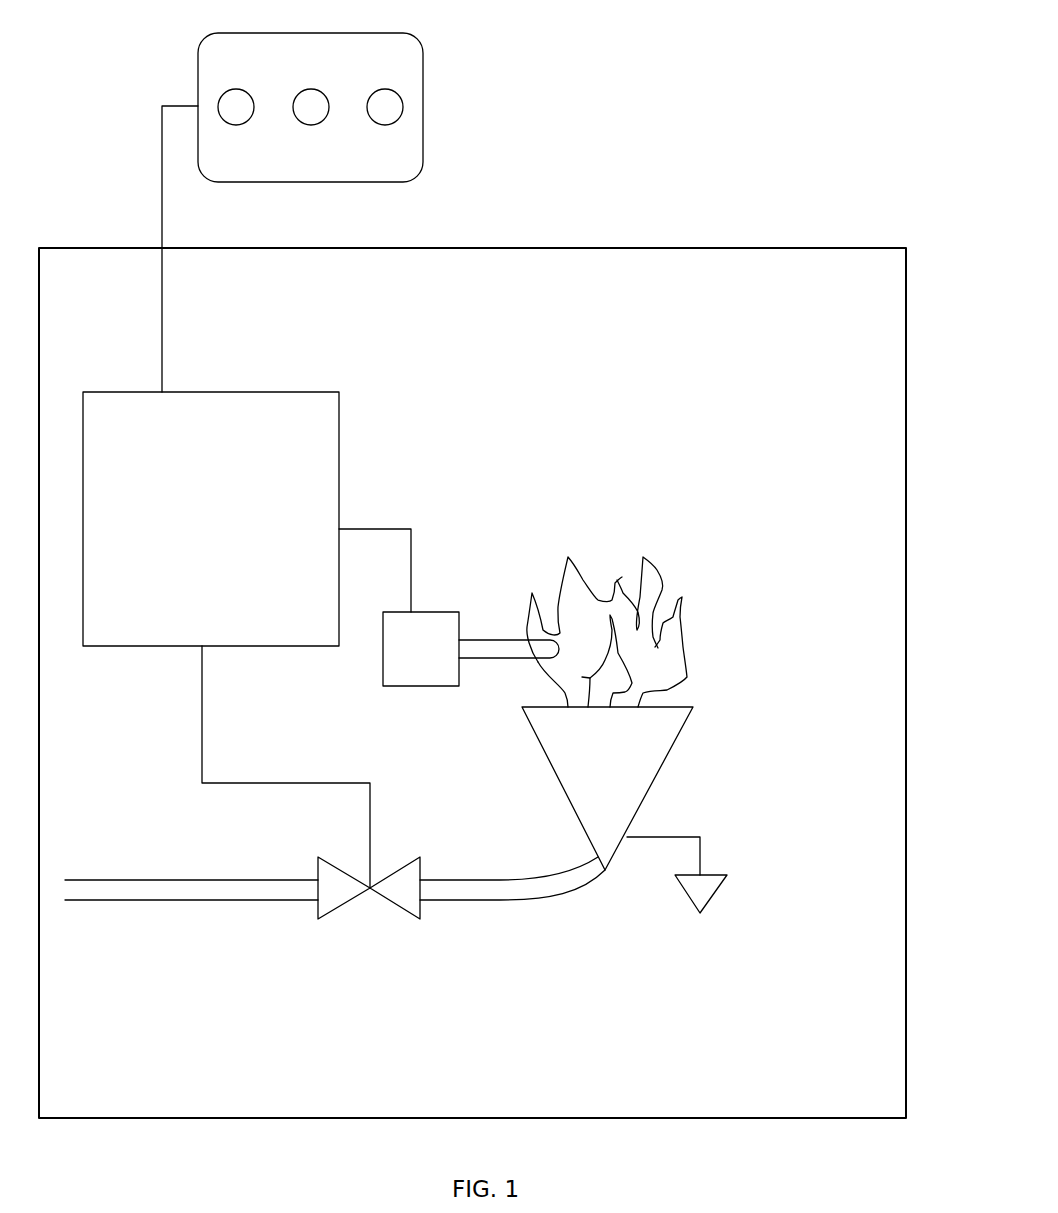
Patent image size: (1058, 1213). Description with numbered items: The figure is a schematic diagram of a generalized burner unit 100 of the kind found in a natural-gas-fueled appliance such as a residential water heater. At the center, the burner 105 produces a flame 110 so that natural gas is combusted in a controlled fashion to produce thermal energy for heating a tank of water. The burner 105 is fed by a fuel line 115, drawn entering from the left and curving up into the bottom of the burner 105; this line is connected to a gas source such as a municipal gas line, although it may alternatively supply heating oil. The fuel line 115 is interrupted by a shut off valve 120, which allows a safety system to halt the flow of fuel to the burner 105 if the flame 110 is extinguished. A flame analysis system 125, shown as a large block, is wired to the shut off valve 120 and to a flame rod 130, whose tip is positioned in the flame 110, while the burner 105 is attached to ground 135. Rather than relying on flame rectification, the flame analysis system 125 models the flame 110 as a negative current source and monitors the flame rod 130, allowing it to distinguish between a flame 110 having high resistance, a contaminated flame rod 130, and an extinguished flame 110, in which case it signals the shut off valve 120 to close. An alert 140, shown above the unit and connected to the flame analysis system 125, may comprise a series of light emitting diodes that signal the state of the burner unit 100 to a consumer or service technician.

The burner unit 100 is at (617, 332).
The burner 105 is at (627, 754).
The flame 110 is at (665, 655).
The fuel line 115 is at (177, 900).
The shut off valve 120 is at (328, 892).
The flame analysis system 125 is at (232, 470).
The flame rod 130 is at (430, 640).
The ground 135 is at (698, 887).
The alert 140 is at (385, 145).